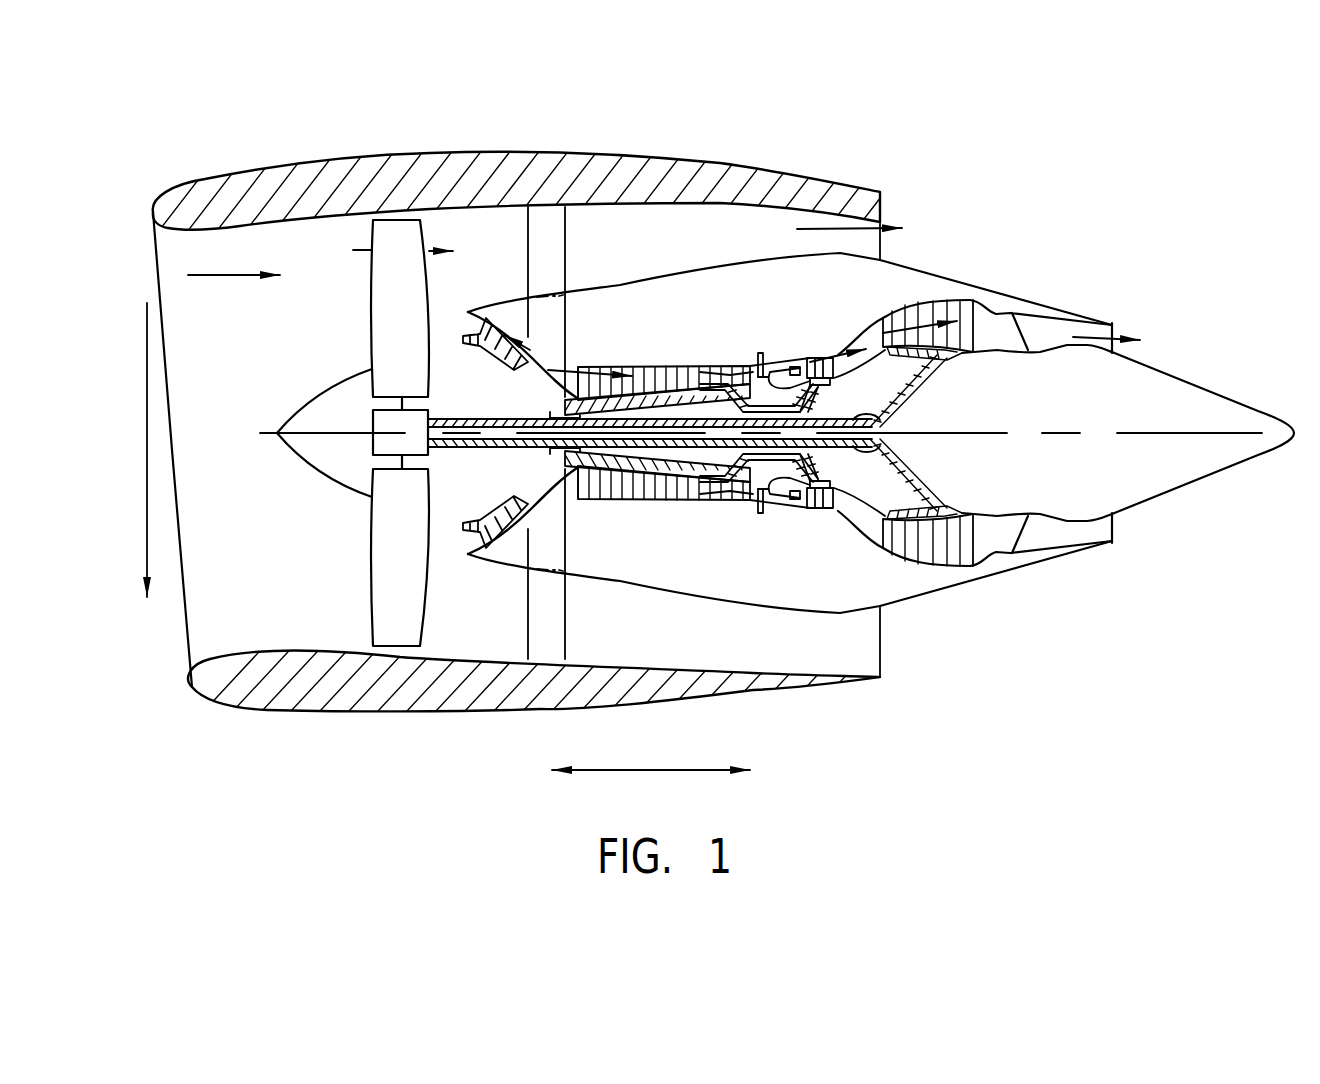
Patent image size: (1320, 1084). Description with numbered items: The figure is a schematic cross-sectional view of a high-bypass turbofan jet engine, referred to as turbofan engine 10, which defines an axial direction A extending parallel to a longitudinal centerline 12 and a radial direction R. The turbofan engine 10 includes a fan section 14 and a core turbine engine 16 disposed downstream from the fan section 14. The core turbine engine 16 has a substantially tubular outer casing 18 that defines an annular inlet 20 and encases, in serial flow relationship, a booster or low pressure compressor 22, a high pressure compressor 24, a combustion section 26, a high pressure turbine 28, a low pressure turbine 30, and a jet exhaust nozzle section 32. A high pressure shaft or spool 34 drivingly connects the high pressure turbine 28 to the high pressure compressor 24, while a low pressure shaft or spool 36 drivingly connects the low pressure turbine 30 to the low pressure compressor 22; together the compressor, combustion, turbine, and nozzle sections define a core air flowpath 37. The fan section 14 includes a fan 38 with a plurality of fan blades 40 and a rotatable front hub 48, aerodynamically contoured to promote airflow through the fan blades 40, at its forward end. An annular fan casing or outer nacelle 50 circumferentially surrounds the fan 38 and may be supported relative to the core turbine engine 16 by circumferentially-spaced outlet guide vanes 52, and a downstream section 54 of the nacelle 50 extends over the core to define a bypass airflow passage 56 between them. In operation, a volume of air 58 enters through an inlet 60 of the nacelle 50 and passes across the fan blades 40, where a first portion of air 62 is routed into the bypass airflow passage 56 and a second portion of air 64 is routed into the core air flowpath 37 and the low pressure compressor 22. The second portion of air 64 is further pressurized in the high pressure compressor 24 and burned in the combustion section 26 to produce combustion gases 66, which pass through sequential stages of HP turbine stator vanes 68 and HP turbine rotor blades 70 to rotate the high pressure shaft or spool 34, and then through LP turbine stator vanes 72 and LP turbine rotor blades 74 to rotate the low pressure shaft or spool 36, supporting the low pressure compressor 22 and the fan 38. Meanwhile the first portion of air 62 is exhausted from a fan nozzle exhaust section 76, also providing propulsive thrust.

The turbofan engine 10 is at (1103, 183).
The longitudinal centerline 12 is at (1057, 433).
The fan section 14 is at (262, 243).
The core turbine engine 16 is at (722, 307).
The outer casing 18 is at (780, 610).
The annular inlet 20 is at (470, 541).
The low pressure compressor 22 is at (520, 514).
The high pressure compressor 24 is at (617, 503).
The combustion section 26 is at (778, 506).
The high pressure turbine 28 is at (838, 498).
The low pressure turbine 30 is at (980, 573).
The jet exhaust nozzle section 32 is at (1038, 544).
The high pressure shaft or spool 34 is at (807, 405).
The low pressure shaft or spool 36 is at (905, 419).
The core air flowpath 37 is at (546, 505).
The fan 38 is at (322, 492).
The fan blades 40 is at (372, 597).
The rotatable front hub 48 is at (292, 452).
The outer nacelle 50 is at (458, 713).
The outlet guide vanes 52 is at (567, 248).
The downstream section of nacelle 54 is at (737, 165).
The bypass airflow passage 56 is at (677, 246).
The volume of air 58 is at (217, 270).
The inlet 60 is at (187, 645).
The first portion of air 62 is at (383, 248).
The second portion of air 64 is at (478, 323).
The combustion gases 66 is at (823, 362).
The HP turbine stator vanes 68 is at (795, 512).
The HP turbine rotor blades 70 is at (818, 474).
The LP turbine stator vanes 72 is at (883, 548).
The LP turbine rotor blades 74 is at (897, 557).
The fan nozzle exhaust section 76 is at (880, 205).
The axial direction A is at (647, 772).
The radial direction R is at (147, 450).